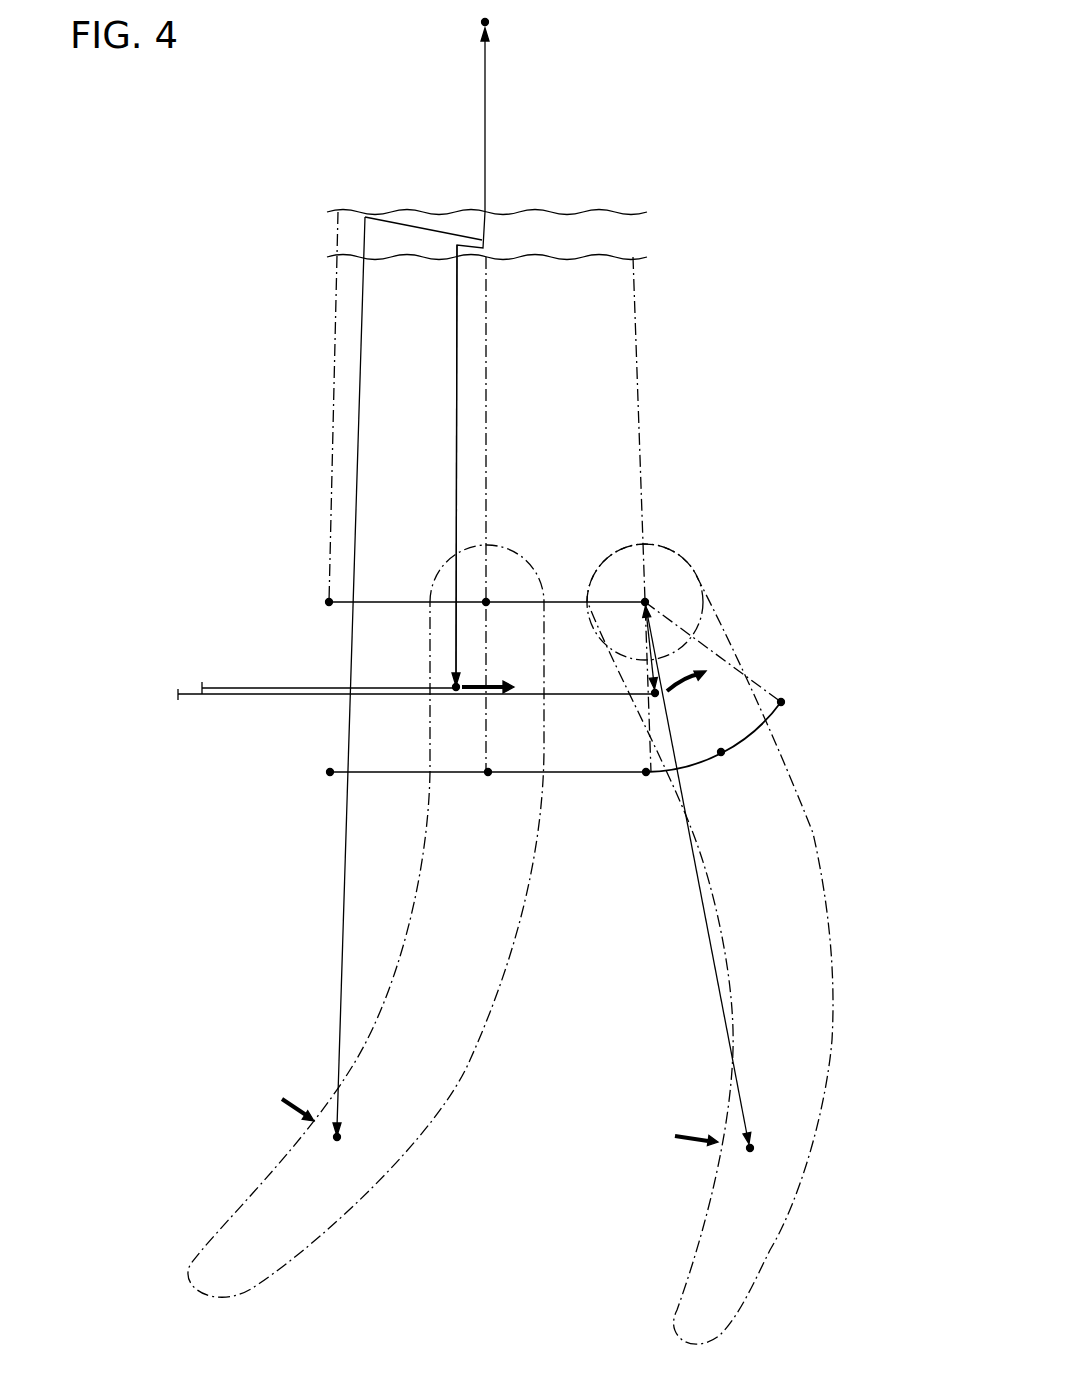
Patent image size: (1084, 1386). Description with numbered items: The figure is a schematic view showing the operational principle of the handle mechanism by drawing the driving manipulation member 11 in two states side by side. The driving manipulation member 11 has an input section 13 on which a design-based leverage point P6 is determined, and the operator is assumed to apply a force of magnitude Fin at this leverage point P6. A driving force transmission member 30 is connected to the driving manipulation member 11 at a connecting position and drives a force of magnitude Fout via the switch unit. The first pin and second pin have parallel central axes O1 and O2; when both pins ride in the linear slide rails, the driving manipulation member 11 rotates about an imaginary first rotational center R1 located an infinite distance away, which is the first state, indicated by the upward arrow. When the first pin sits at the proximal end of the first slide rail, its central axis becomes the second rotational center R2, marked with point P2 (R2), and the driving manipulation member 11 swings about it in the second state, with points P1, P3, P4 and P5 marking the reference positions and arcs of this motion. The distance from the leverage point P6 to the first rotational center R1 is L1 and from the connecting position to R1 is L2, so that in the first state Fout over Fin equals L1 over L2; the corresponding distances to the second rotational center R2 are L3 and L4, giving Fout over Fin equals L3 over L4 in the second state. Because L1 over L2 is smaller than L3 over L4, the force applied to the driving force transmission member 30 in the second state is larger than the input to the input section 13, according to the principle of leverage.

The first rotational center R1 is at (490, 22).
The second rotational center R2 is at (645, 602).
The distance between leverage point P6 and first rotational center R1 L1 is at (349, 645).
The distance between connecting position and first rotational center R1 L2 is at (455, 470).
The distance between leverage point P6 and second rotational center R2 L3 is at (700, 915).
The distance between connecting position and second rotational center R2 L4 is at (648, 653).
The point P1 is at (325, 602).
The point P2 is at (648, 600).
The point P3 is at (326, 772).
The point P4 is at (644, 778).
The point P5 is at (786, 703).
The leverage point P6 is at (341, 1138).
The central axis of first pin O1 is at (490, 598).
The central axis of second pin O2 is at (488, 777).
The magnitude of force driven by driving force transmission member Fout is at (493, 683).
The magnitude of force applied to driving manipulation member Fin is at (288, 1105).
The driving manipulation member 11 is at (443, 1100).
The input section 13 is at (235, 1205).
The driving force transmission member 30 is at (257, 689).